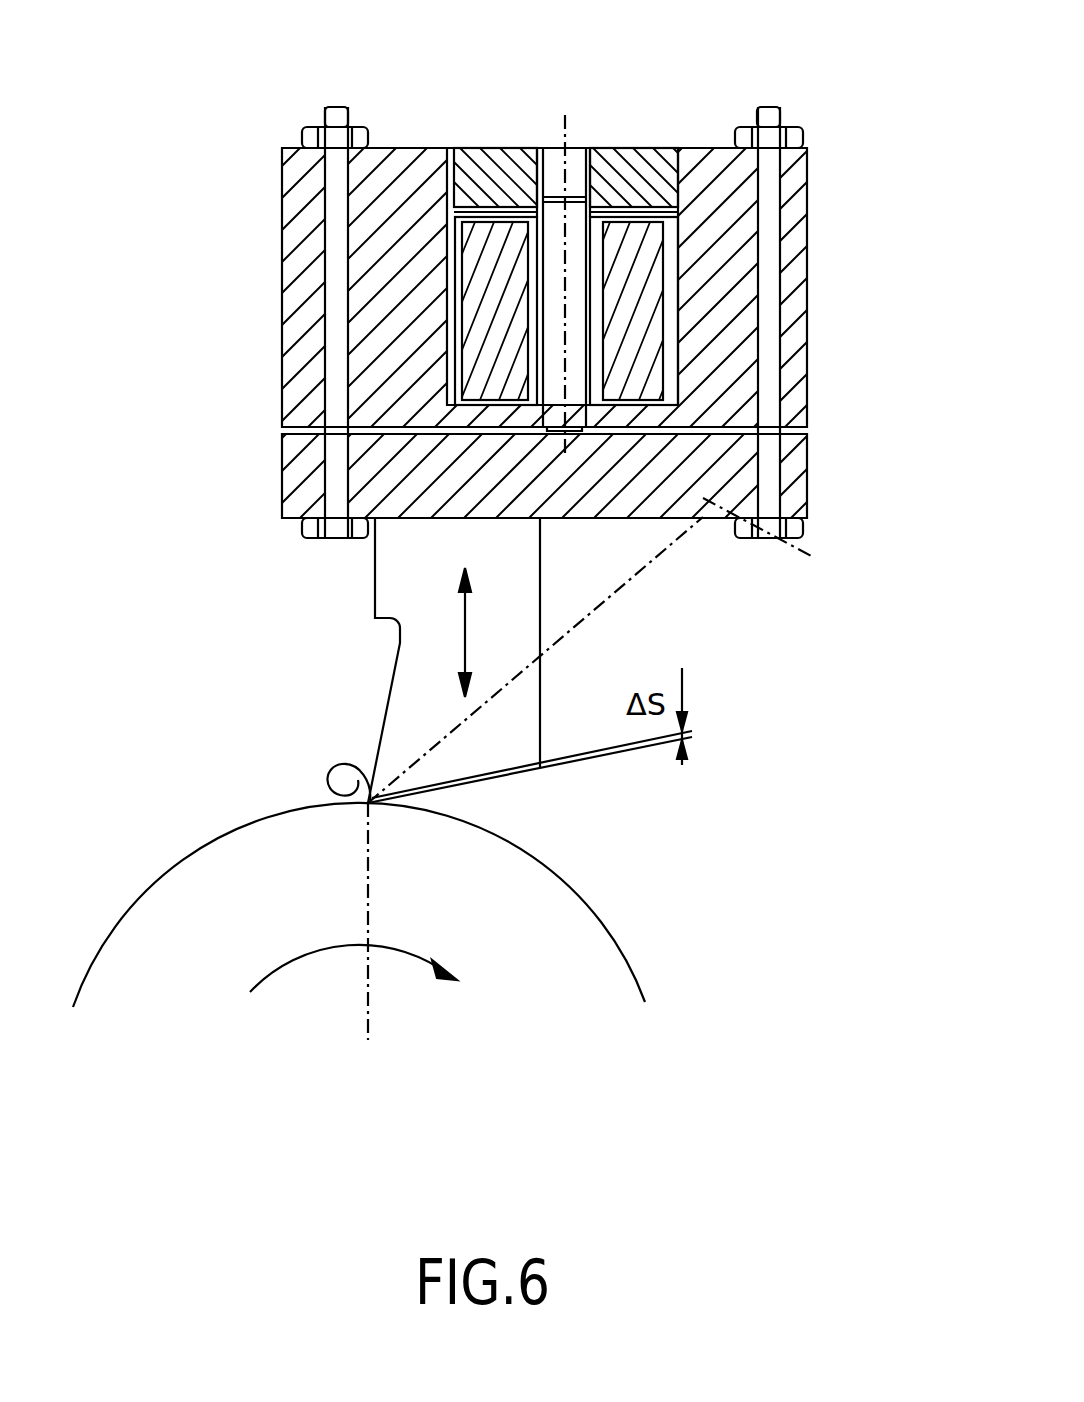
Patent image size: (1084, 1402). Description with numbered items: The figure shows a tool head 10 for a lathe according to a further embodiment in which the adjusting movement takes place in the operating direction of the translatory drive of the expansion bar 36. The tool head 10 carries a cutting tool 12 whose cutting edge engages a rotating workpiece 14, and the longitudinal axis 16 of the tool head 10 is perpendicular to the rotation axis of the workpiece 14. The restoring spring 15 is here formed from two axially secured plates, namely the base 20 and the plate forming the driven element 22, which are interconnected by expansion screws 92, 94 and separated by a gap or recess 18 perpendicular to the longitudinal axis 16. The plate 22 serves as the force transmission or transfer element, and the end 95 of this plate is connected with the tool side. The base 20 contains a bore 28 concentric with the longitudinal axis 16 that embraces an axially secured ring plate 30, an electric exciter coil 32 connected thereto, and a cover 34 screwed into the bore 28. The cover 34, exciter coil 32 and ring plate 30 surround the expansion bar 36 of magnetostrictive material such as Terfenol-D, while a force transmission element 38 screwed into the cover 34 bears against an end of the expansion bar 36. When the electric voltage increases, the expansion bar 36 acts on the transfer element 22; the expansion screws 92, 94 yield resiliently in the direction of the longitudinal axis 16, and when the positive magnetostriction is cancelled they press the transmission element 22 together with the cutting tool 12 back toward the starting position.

The tool head 10 is at (168, 497).
The cutting tool 12 is at (410, 712).
The workpiece 14 is at (283, 848).
The restoring spring 15 is at (708, 553).
The longitudinal axis 16 is at (563, 118).
The gap or recess 18 is at (425, 428).
The base 20 is at (750, 189).
The driven element 22 is at (390, 485).
The bore 28 is at (500, 392).
The ring plate 30 is at (636, 216).
The exciter coil 32 is at (500, 303).
The cover 34 is at (651, 160).
The expansion bar 36 is at (550, 263).
The force transmission element 38 is at (541, 178).
The expansion screw 92 is at (333, 347).
The expansion screw 94 is at (763, 397).
The end of plate 95 is at (700, 148).